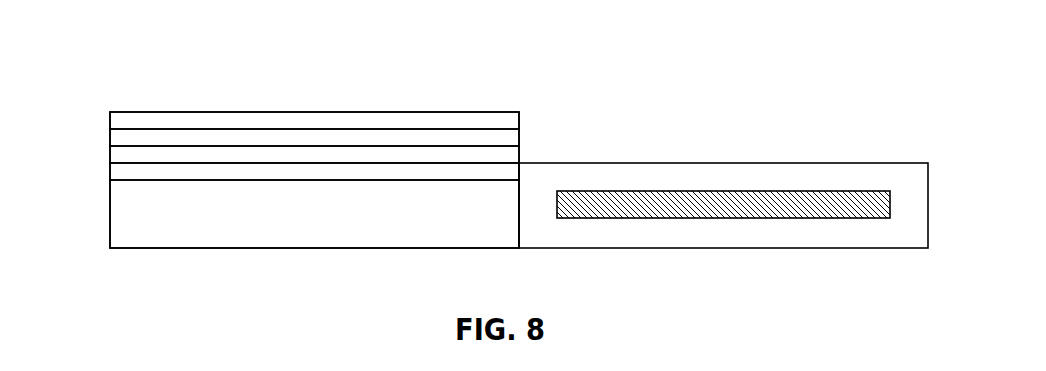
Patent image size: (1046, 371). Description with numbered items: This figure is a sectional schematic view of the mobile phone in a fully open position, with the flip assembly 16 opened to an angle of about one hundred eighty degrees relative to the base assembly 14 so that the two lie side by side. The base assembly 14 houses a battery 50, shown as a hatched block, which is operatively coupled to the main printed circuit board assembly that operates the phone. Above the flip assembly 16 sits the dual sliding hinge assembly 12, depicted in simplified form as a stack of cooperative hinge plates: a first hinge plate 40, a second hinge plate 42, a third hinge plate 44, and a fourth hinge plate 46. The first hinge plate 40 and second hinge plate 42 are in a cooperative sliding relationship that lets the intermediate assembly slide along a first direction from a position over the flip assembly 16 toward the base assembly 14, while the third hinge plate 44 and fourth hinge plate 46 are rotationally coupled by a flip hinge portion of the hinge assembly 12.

The dual sliding hinge assembly 12 is at (98, 157).
The base assembly 14 is at (792, 248).
The flip assembly 16 is at (212, 248).
The first hinge plate 40 is at (365, 180).
The second hinge plate 42 is at (519, 153).
The third hinge plate 44 is at (519, 140).
The fourth hinge plate 46 is at (449, 112).
The battery 50 is at (654, 218).